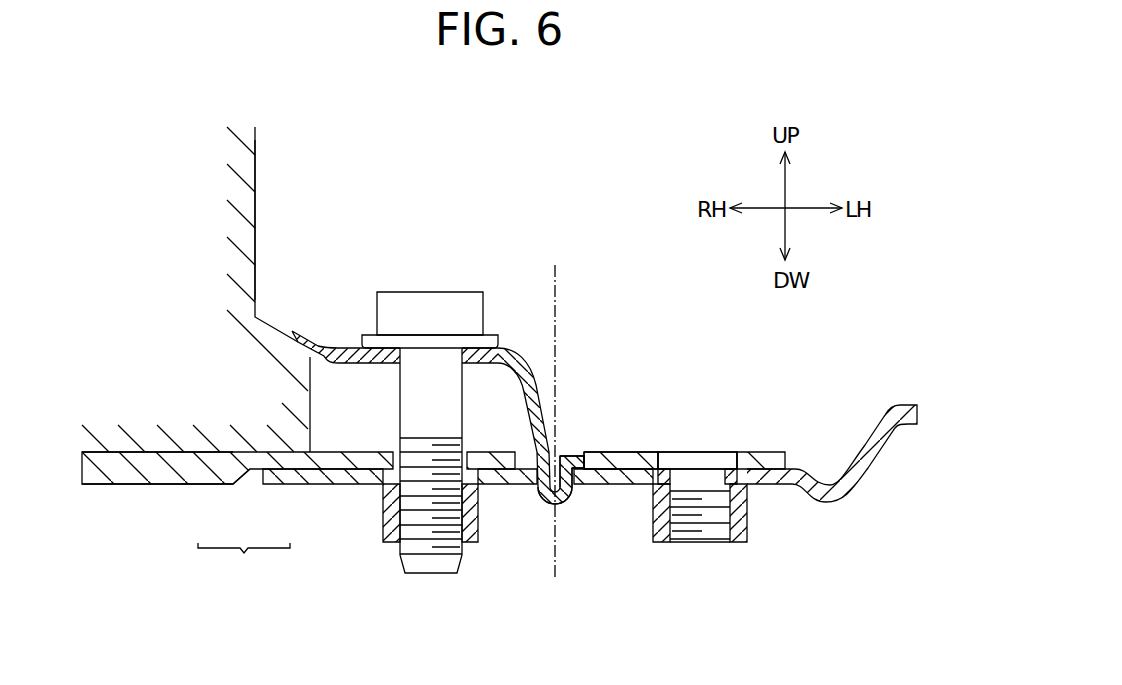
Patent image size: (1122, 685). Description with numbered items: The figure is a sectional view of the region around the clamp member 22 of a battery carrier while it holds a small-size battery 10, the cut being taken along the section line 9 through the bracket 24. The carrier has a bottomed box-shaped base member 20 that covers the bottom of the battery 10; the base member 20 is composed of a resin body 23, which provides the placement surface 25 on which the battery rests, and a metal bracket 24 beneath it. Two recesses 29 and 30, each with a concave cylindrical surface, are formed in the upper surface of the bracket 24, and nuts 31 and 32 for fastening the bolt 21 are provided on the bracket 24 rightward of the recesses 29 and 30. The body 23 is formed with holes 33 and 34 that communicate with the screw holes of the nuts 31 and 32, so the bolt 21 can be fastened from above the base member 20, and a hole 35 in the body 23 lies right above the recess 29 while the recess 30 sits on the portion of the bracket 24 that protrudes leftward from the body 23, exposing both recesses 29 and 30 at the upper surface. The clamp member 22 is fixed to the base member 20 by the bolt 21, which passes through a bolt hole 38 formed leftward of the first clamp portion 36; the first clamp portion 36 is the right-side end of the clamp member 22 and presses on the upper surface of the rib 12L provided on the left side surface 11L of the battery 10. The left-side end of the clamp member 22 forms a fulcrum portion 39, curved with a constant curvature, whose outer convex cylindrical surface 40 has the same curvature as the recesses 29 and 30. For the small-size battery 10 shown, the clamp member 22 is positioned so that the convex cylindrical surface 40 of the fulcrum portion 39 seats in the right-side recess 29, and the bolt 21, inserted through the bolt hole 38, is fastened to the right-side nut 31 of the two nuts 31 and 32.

The section line IX-IX 9 is at (575, 584).
The battery 10 is at (262, 172).
The left side surface 11L is at (259, 232).
The rib 12L is at (290, 397).
The base member 20 is at (244, 564).
The bolt 21 is at (427, 305).
The clamp member 22 is at (523, 352).
The body 23 is at (203, 470).
The bracket 24 is at (290, 473).
The placement surface 25 is at (167, 452).
The recess 29 is at (540, 492).
The recess 30 is at (828, 484).
The nut 31 is at (392, 505).
The nut 32 is at (655, 508).
The hole 33 is at (466, 450).
The hole 34 is at (736, 452).
The hole 35 is at (587, 462).
The first clamp portion 36 is at (315, 345).
The bolt hole 38 is at (479, 368).
The fulcrum portion 39 is at (558, 477).
The convex cylindrical surface 40 is at (583, 482).